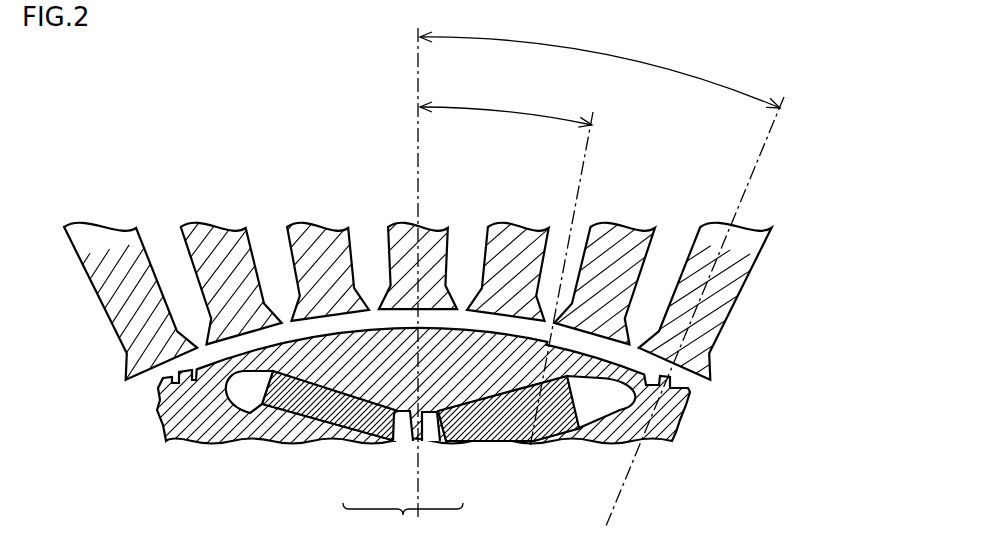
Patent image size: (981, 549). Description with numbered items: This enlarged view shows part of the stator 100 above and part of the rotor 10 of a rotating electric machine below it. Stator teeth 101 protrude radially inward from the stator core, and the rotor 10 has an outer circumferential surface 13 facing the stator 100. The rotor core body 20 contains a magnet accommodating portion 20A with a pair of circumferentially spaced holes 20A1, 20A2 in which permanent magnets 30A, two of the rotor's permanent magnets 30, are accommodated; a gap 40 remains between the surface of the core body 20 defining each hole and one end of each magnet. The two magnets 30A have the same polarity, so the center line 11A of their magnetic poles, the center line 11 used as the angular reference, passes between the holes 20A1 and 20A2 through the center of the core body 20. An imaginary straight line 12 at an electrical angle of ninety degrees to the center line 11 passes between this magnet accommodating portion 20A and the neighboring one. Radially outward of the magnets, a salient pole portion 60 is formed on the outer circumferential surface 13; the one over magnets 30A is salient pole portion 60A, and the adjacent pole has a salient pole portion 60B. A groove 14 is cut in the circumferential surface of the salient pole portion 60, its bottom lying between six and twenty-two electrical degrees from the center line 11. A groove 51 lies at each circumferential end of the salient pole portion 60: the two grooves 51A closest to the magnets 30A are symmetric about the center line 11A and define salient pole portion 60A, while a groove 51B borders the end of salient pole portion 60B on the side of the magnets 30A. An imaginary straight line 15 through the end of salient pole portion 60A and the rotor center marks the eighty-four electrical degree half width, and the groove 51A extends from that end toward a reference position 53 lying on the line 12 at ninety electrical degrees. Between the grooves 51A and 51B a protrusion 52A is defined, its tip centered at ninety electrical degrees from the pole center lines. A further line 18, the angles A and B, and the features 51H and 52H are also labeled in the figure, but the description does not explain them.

The rotor 10 is at (667, 442).
The center line 11 is at (418, 58).
The center line of the magnetic poles of permanent magnets 30A 11A is at (366, 83).
The imaginary straight line 12 is at (781, 122).
The outer circumferential surface 13 is at (337, 331).
The groove 14 is at (577, 350).
The imaginary straight line 15 is at (545, 343).
The reference line 18 is at (595, 133).
The core body 20 is at (553, 430).
The magnet accommodating portion 20A is at (403, 521).
The hole 20A1 is at (379, 412).
The hole 20A2 is at (460, 411).
The permanent magnet 30 is at (428, 448).
The permanent magnet 30A is at (302, 430).
The gap 40 is at (595, 391).
The groove 51 is at (116, 291).
The groove 51A is at (185, 372).
The groove 51B is at (657, 386).
The first groove 51H is at (152, 378).
The protrusion 52A is at (668, 376).
The second groove 52H is at (174, 374).
The reference position 53 is at (598, 430).
The salient pole portion 60 is at (372, 146).
The salient pole portion 60A is at (372, 312).
The salient pole portion 60B is at (678, 396).
The stator 100 is at (635, 243).
The stator teeth 101 is at (503, 243).
The angle A is at (600, 70).
The angle B is at (506, 109).